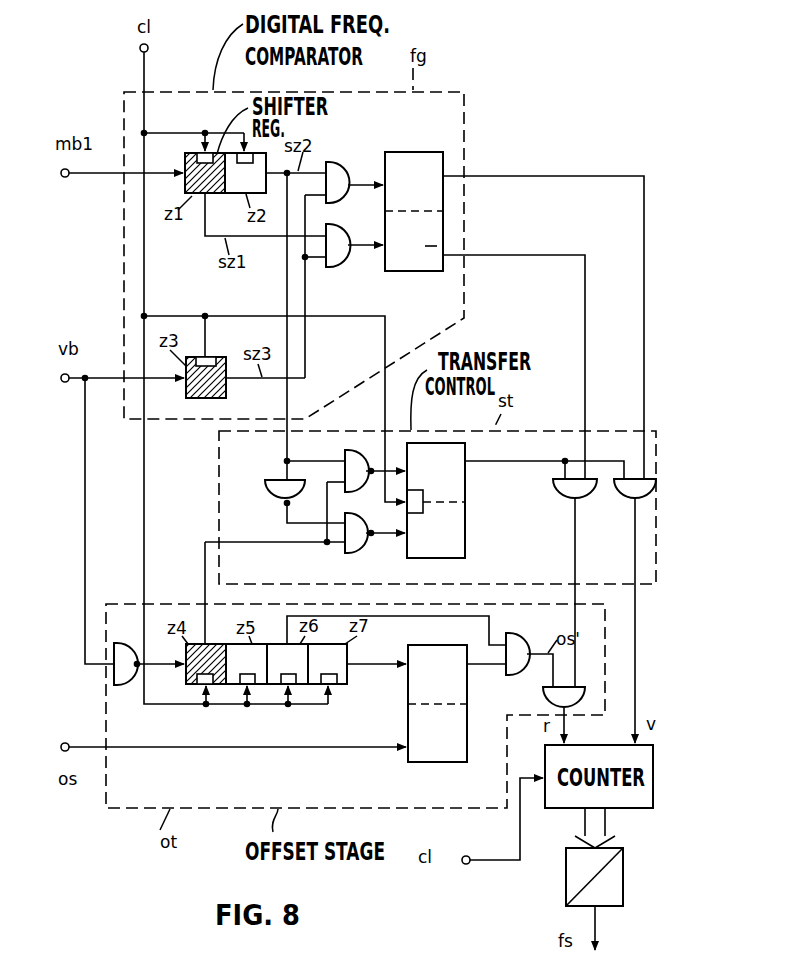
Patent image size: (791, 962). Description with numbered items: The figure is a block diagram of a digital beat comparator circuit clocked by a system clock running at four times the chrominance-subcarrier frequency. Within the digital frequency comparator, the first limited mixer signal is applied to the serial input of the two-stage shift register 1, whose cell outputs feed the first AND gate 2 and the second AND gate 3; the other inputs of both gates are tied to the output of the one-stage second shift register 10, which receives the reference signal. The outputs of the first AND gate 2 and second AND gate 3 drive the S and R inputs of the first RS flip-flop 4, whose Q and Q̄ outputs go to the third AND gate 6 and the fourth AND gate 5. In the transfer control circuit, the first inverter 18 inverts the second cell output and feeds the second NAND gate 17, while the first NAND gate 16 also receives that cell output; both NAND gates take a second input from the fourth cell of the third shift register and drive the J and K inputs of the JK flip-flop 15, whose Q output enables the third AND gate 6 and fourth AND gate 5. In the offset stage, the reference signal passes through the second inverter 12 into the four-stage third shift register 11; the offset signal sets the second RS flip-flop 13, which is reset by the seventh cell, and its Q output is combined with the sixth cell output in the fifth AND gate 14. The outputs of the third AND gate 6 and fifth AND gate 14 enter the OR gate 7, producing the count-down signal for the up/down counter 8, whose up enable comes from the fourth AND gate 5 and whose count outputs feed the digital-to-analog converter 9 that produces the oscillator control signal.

The two-stage shift register 1 is at (209, 152).
The first AND gate 2 is at (340, 162).
The second AND gate 3 is at (339, 268).
The first RS flip-flop 4 is at (424, 152).
The fourth AND gate 5 is at (626, 496).
The third AND gate 6 is at (557, 496).
The OR gate 7 is at (543, 697).
The up/down counter 8 is at (550, 809).
The digital-to-analog converter 9 is at (566, 880).
The one-stage second shift register 10 is at (217, 306).
The four-stage third shift register 11 is at (260, 741).
The second inverter 12 is at (130, 686).
The second RS flip-flop 13 is at (460, 762).
The fifth AND gate 14 is at (522, 634).
The JK flip-flop 15 is at (465, 540).
The first NAND gate 16 is at (372, 449).
The second NAND gate 17 is at (357, 556).
The first inverter 18 is at (262, 494).